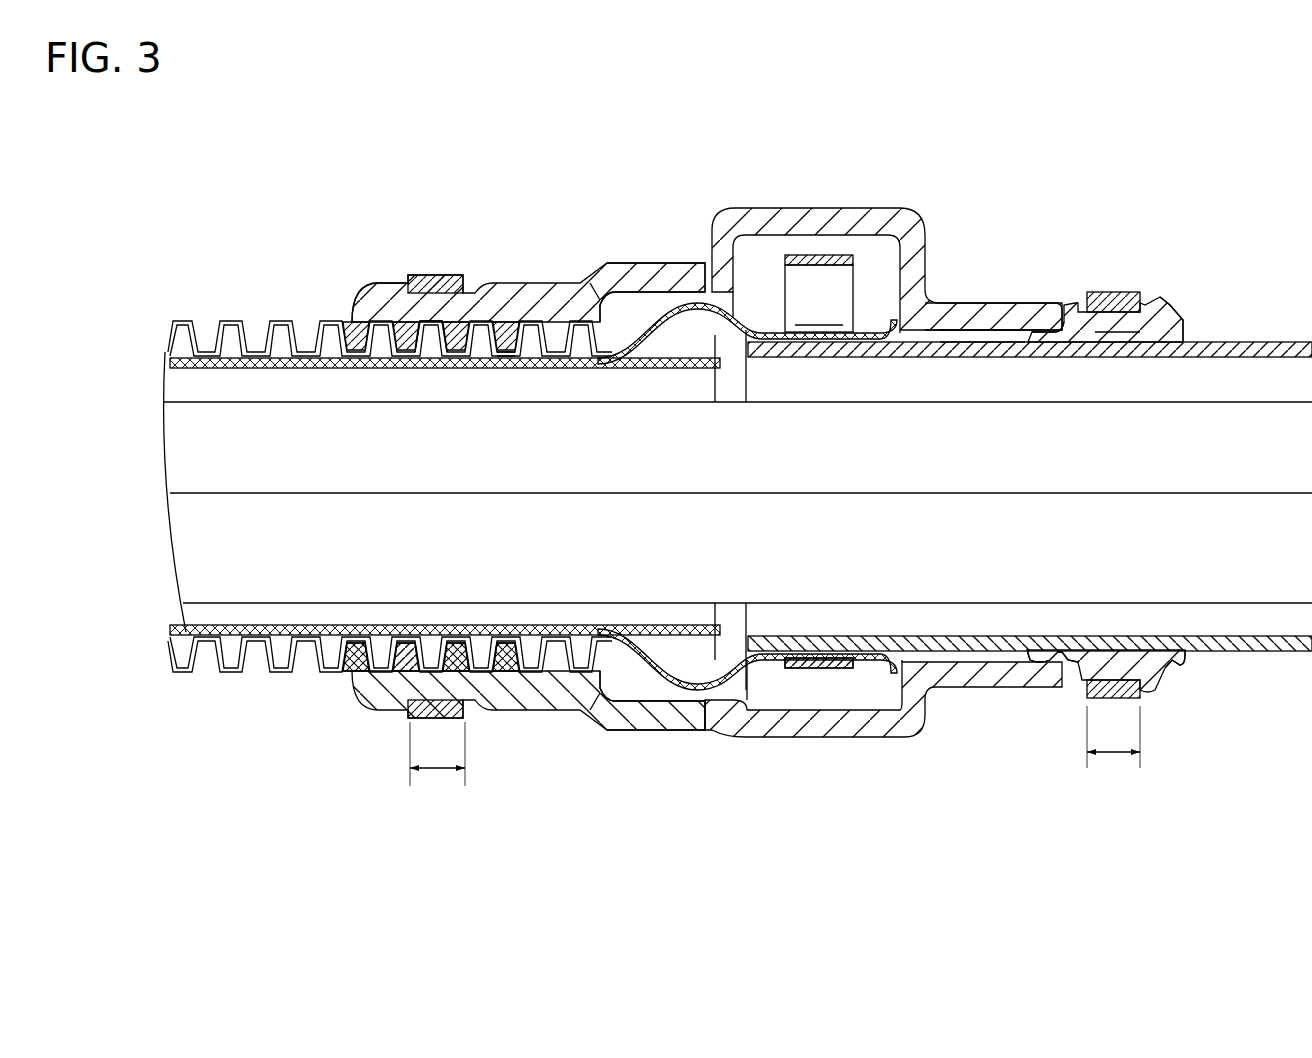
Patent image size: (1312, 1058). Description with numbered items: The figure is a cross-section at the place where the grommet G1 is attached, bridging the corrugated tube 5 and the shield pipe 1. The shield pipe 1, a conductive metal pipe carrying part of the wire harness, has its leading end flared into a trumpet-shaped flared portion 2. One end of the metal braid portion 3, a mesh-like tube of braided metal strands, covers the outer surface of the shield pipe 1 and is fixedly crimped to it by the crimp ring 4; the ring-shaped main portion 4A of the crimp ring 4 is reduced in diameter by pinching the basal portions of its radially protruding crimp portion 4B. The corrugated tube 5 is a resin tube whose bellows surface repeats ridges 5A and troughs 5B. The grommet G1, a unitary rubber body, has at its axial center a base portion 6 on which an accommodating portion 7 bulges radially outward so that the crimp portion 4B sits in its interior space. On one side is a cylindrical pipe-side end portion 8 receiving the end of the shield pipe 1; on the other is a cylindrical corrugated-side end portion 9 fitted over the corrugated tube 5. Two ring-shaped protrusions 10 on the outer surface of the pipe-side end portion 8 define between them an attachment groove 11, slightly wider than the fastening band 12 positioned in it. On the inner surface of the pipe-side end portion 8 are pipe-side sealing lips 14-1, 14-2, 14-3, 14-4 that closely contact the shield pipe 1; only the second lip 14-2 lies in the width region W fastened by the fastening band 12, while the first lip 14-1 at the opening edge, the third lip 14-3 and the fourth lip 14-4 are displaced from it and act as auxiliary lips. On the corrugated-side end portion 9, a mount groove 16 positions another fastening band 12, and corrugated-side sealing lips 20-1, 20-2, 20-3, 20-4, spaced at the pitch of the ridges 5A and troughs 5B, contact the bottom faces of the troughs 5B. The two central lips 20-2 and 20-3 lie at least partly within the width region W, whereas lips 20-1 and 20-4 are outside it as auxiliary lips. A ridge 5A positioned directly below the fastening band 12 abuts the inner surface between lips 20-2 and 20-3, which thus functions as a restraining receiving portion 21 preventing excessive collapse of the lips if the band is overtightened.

The shield pipe 1 is at (1246, 332).
The flared portion 2 is at (722, 352).
The metal braid portion 3 is at (650, 337).
The crimp ring 4 is at (788, 668).
The main portion 4A is at (845, 668).
The crimp portion 4B is at (800, 255).
The corrugated tube 5 is at (176, 311).
The ridge 5A is at (450, 328).
The trough 5B is at (523, 375).
The base portion 6 is at (812, 733).
The accommodating portion 7 is at (836, 215).
The pipe-side end portion 8 is at (1033, 318).
The corrugated-side end portion 9 is at (509, 283).
The protrusion 10 is at (1066, 300).
The attachment groove 11 is at (1080, 302).
The fastening band 12 is at (456, 273).
The first lip 14-1 is at (1182, 657).
The second lip 14-2 is at (1123, 653).
The third lip 14-3 is at (1063, 655).
The fourth lip 14-4 is at (1030, 655).
The mount groove 16 is at (402, 292).
The corrugated-side sealing lip 20-1 is at (360, 657).
The corrugated-side sealing lip 20-2 is at (410, 660).
The corrugated-side sealing lip 20-3 is at (463, 652).
The corrugated-side sealing lip 20-4 is at (515, 660).
The restraining receiving portion 21 is at (416, 330).
The grommet G1 is at (986, 290).
The width region W is at (775, 746).